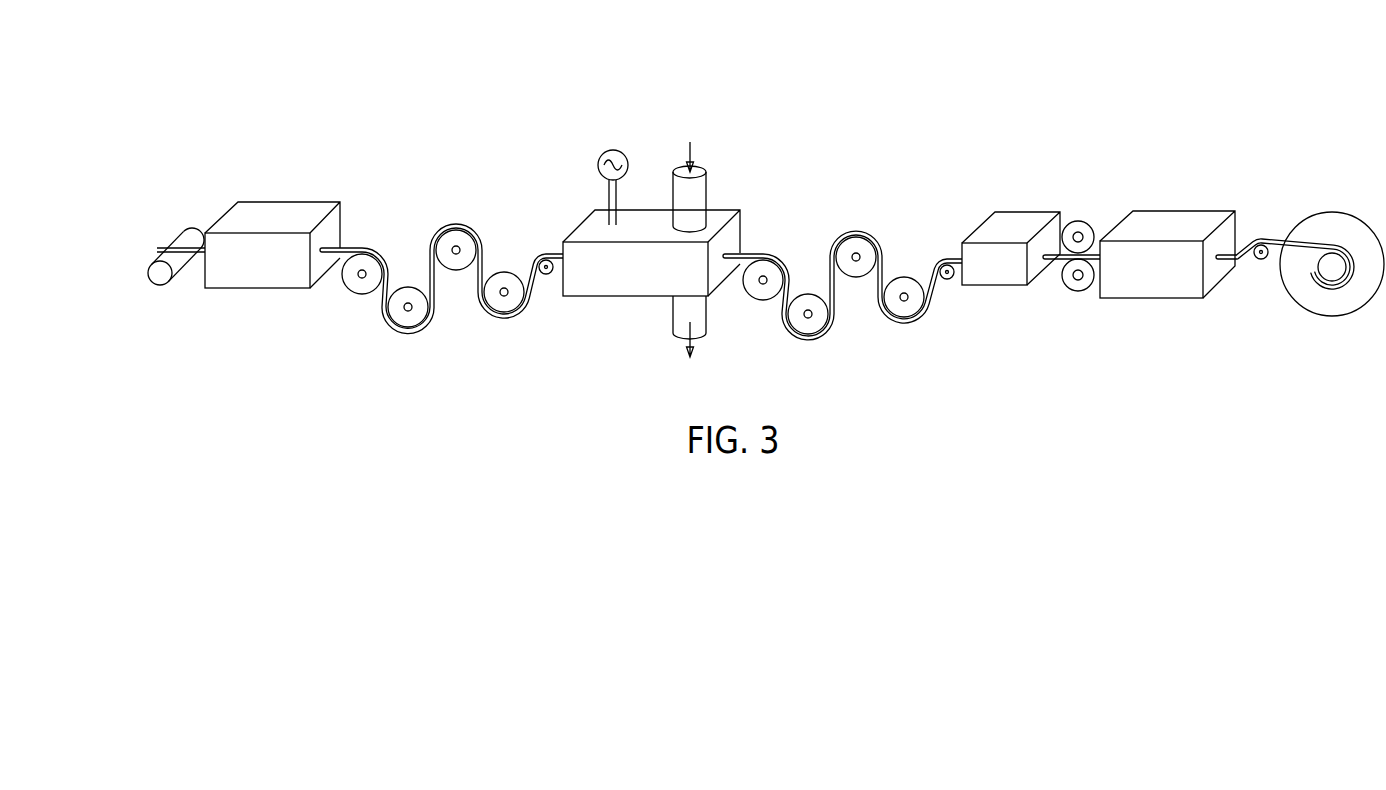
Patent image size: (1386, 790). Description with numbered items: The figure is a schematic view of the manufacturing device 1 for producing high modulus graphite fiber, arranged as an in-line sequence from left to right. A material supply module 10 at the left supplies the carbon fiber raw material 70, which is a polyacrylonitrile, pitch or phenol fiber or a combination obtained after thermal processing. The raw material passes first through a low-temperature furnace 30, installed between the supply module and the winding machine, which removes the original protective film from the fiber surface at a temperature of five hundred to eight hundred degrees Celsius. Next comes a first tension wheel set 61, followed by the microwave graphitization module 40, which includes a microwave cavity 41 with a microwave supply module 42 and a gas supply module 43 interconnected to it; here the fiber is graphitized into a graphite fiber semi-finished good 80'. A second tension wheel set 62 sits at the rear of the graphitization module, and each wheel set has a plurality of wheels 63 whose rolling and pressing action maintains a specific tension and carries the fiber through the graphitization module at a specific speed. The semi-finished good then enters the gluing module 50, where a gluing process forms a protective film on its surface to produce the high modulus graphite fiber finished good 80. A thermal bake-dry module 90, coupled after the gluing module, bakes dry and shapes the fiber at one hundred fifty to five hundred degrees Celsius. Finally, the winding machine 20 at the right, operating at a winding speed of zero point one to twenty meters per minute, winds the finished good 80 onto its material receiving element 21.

The manufacturing device 1 is at (1112, 57).
The material supply module 10 is at (162, 283).
The carbon fiber raw material 70 is at (202, 242).
The low-temperature furnace 30 is at (290, 213).
The first tension wheel set 61 is at (443, 210).
The wheel 63 is at (360, 285).
The microwave graphitization module 40 is at (680, 241).
The microwave cavity 41 is at (625, 282).
The microwave supply module 42 is at (610, 150).
The gas supply module 43 is at (700, 170).
The second tension wheel set 62 is at (847, 227).
The graphite fiber semi-finished good 80' is at (989, 309).
The gluing module 50 is at (1017, 222).
The thermal bake-dry module 90 is at (1162, 218).
The high modulus graphite fiber finished good 80 is at (1257, 297).
The winding machine 20 is at (1300, 269).
The material receiving element 21 is at (1330, 268).